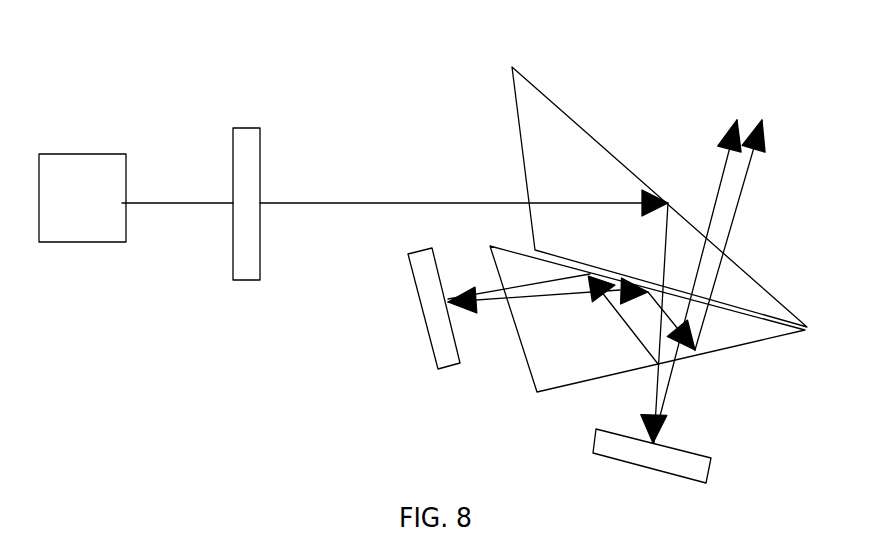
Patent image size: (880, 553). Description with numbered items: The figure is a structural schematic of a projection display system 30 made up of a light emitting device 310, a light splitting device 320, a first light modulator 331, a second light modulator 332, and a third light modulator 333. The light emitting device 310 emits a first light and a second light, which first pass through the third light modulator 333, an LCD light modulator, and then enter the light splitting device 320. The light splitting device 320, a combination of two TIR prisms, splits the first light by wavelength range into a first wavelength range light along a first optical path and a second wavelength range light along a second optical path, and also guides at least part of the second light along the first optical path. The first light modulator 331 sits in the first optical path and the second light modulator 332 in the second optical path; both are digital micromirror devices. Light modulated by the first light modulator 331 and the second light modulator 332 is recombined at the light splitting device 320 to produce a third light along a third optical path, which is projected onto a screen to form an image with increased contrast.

The projection display system 30 is at (298, 400).
The light emitting device 310 is at (85, 182).
The light splitting device 320 is at (550, 128).
The first light modulator 331 is at (420, 272).
The second light modulator 332 is at (687, 472).
The third light modulator 333 is at (262, 147).